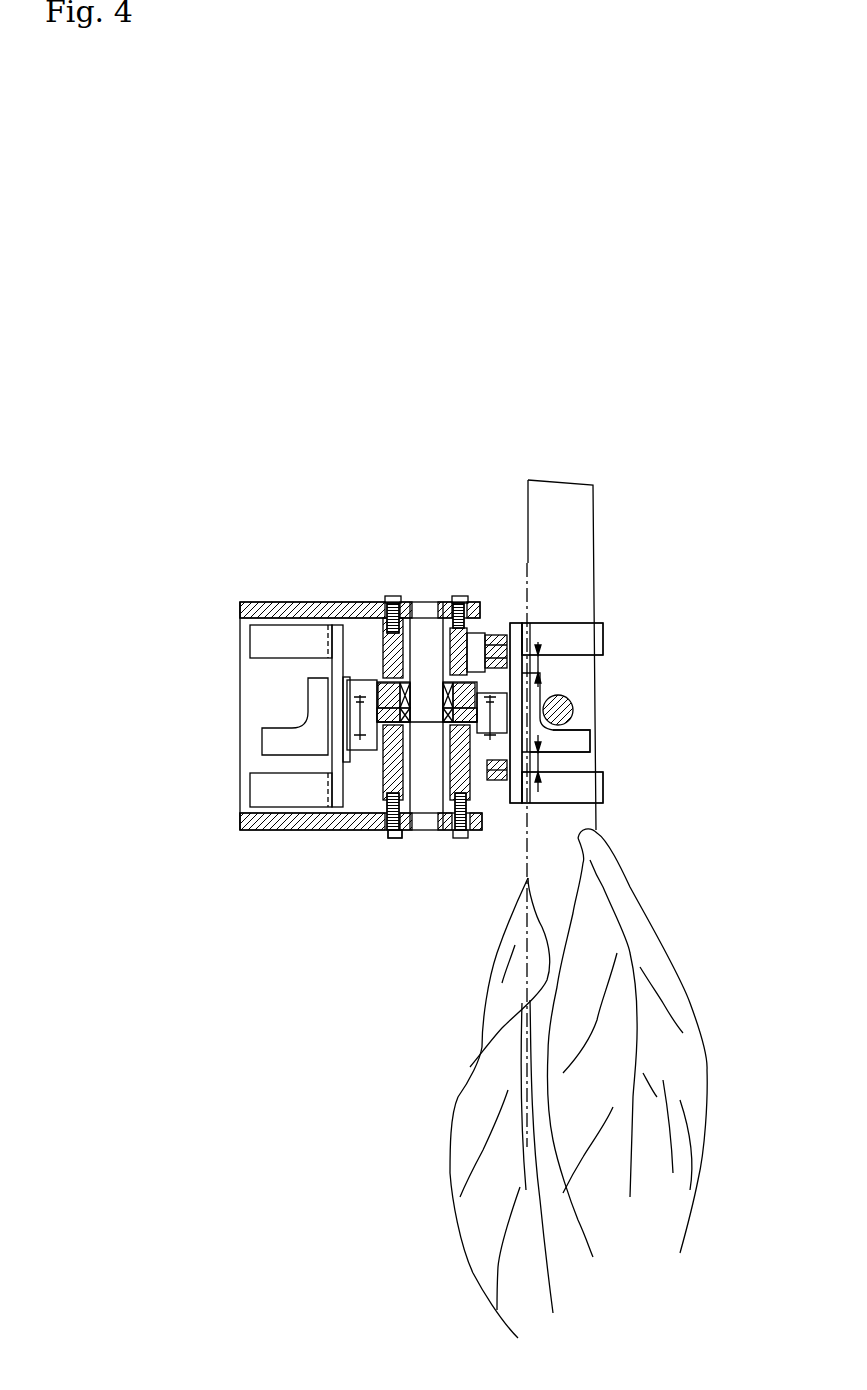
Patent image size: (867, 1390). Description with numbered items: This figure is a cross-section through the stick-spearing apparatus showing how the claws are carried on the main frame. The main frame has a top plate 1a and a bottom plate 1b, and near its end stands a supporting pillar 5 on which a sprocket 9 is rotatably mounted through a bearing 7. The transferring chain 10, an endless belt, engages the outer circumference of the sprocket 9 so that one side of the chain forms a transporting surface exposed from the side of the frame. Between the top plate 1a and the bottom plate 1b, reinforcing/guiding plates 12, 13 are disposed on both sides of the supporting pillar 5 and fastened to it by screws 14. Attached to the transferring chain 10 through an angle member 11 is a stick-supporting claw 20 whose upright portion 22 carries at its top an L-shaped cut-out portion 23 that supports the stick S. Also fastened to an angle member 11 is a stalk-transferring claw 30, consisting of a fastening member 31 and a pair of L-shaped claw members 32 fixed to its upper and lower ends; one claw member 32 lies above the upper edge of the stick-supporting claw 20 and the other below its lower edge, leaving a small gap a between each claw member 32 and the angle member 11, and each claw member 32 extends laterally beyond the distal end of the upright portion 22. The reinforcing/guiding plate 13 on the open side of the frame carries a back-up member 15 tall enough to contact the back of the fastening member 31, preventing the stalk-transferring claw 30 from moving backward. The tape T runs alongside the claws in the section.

The top plate 1a is at (305, 607).
The bottom plate 1b is at (300, 822).
The supporting pillar 5 is at (427, 602).
The bearing 7 is at (377, 683).
The sprocket 9 is at (382, 735).
The transferring chain 10 is at (493, 636).
The angle member 11 is at (476, 640).
The reinforcing/guiding plate 12 is at (385, 795).
The reinforcing/guiding plate 13 is at (452, 780).
The screw 14 is at (393, 838).
The back-up member 15 is at (500, 768).
The stick-supporting claw 20 is at (278, 738).
The upright portion 22 is at (560, 745).
The cut-out portion 23 is at (580, 720).
The stalk-transferring claw 30 is at (252, 649).
The fastening member 31 is at (518, 625).
The claw member 32 is at (570, 628).
The tape T is at (570, 495).
The stick S is at (590, 718).
The gap a is at (538, 665).